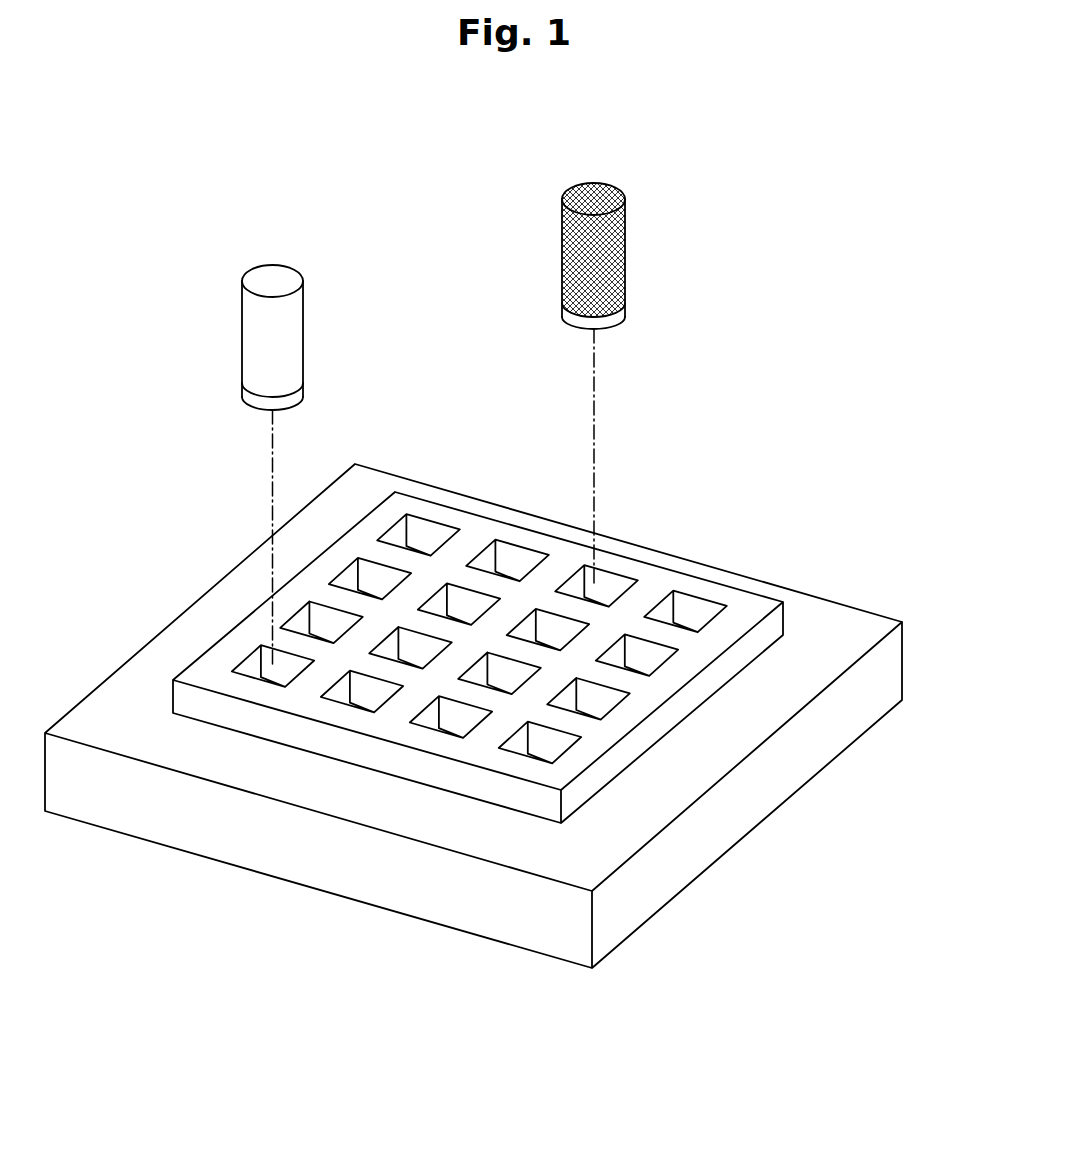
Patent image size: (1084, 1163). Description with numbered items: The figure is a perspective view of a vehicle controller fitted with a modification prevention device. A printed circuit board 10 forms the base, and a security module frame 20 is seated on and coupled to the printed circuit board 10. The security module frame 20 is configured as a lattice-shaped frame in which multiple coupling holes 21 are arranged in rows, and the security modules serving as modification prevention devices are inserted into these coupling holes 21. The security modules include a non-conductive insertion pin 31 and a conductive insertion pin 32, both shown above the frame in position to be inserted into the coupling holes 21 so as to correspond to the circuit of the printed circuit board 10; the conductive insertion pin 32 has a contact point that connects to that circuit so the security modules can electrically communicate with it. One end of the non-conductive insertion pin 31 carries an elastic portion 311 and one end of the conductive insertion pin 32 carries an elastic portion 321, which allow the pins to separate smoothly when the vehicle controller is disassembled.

The printed circuit board 10 is at (850, 640).
The security module frame 20 is at (747, 607).
The coupling holes 21 is at (260, 655).
The non-conductive insertion pin 31 is at (295, 343).
The elastic portion 311 is at (260, 400).
The conductive insertion pin 32 is at (617, 262).
The elastic portion 321 is at (577, 317).